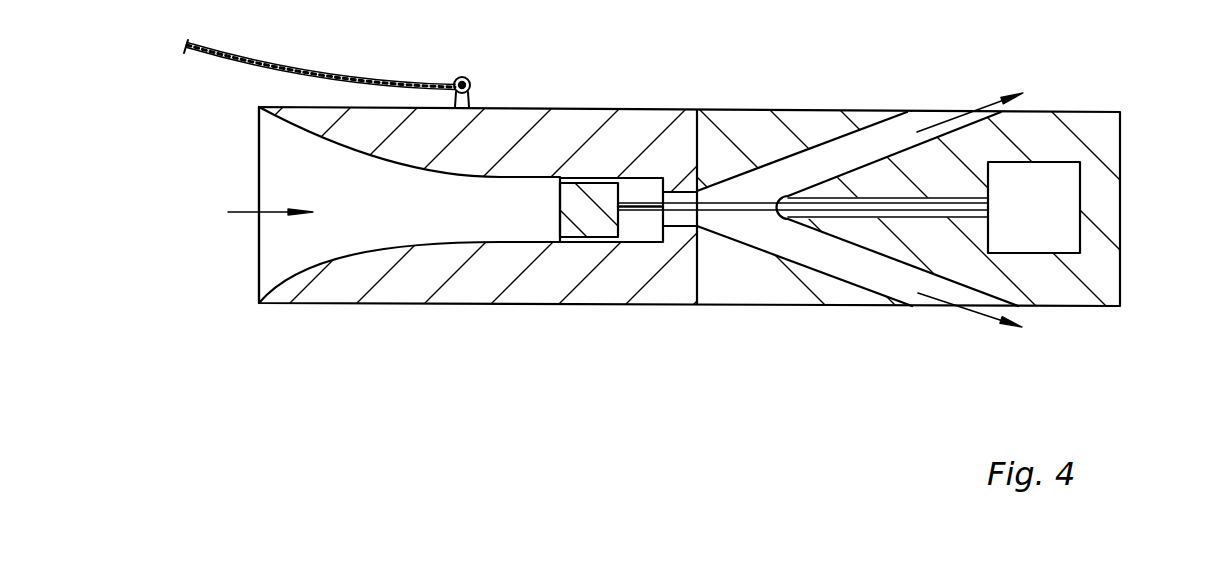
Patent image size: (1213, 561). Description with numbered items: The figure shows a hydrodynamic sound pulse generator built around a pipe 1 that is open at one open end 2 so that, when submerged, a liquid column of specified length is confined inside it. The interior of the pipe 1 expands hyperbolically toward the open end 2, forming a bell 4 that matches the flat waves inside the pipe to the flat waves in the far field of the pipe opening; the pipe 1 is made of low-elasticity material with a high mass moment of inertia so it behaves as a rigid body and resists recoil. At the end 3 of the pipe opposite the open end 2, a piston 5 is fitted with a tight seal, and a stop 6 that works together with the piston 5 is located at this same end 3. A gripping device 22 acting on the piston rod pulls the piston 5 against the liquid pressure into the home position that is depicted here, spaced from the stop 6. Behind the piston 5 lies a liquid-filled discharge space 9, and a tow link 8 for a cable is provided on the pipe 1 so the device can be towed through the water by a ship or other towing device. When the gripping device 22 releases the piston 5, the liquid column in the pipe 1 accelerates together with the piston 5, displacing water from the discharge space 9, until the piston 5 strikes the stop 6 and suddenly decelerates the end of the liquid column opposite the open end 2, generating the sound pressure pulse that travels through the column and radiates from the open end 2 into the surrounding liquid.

The pipe 1 is at (317, 305).
The open end 2 is at (262, 305).
The end of the pipe opposite the open end 3 is at (637, 227).
The bell 4 is at (362, 255).
The piston 5 is at (570, 223).
The stop 6 is at (665, 233).
The tow link 8 is at (470, 82).
The discharge space 9 is at (878, 140).
The gripping device 22 is at (1062, 211).